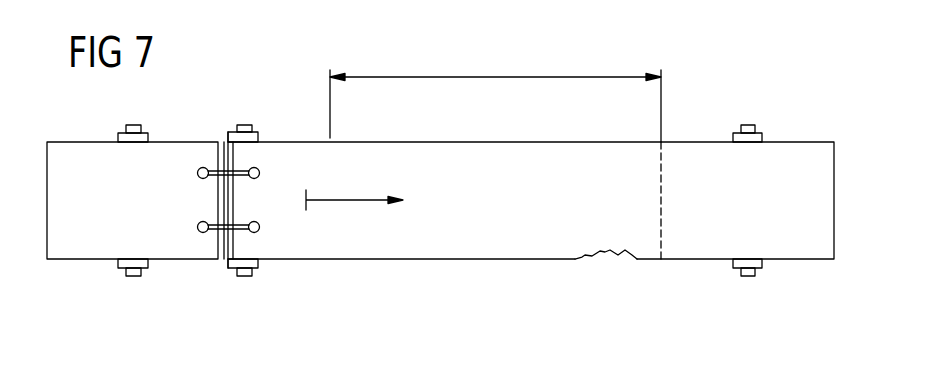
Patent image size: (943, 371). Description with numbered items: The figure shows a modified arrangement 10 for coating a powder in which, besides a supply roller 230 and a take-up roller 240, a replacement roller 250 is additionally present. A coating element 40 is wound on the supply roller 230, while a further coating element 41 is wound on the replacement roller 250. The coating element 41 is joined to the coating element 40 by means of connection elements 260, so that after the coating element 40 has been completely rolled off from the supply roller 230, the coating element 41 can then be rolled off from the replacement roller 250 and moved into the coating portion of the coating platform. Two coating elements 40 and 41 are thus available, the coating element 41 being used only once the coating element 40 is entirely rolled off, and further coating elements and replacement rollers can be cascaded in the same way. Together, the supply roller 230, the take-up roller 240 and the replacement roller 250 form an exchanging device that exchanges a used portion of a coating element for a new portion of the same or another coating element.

The arrangement 10 is at (718, 116).
The coating element 40 is at (445, 252).
The further coating element 41 is at (85, 252).
The supply roller 230 is at (253, 266).
The take-up roller 240 is at (758, 268).
The replacement roller 250 is at (143, 266).
The connection elements 260 is at (224, 142).